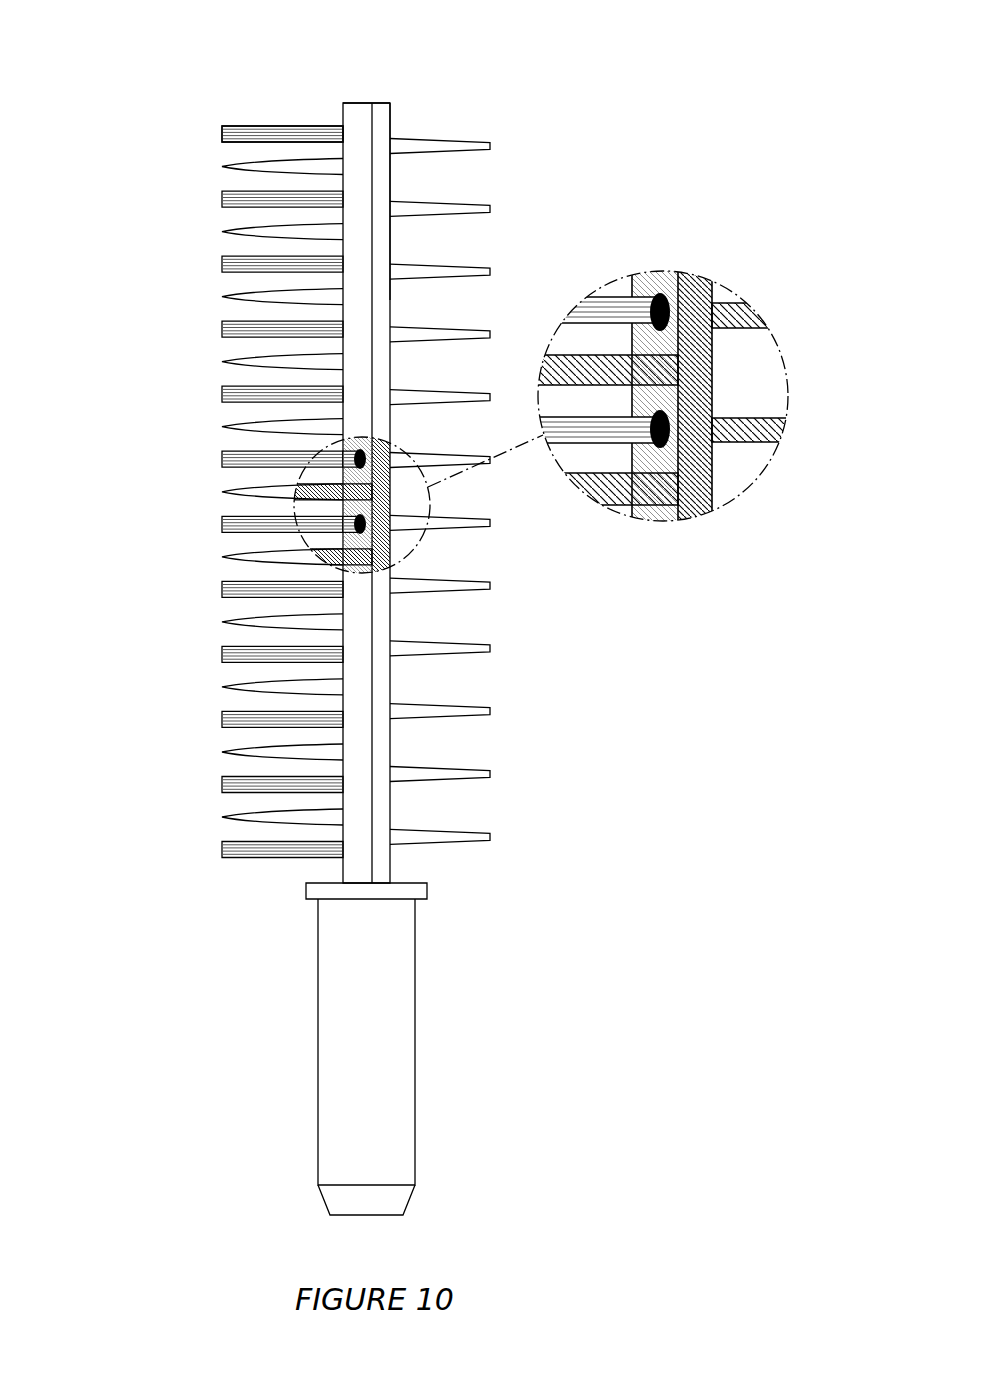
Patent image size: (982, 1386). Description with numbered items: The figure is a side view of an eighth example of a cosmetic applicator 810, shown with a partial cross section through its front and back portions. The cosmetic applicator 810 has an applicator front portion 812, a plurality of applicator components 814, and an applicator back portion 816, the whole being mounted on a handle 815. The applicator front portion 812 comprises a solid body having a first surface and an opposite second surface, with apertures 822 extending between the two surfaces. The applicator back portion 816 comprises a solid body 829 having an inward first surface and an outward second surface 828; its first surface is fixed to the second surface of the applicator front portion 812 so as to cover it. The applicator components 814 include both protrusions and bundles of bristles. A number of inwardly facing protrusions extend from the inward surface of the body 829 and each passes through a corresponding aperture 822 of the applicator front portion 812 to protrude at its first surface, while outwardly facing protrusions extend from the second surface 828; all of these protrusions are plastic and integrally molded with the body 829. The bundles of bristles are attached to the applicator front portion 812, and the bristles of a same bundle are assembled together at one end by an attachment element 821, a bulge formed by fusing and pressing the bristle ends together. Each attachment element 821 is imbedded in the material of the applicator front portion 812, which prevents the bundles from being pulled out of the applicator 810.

The cosmetic applicator 810 is at (438, 88).
The applicator front portion 812 is at (357, 103).
The applicator components 814 is at (342, 466).
The handle 815 is at (415, 1053).
The applicator back portion 816 is at (393, 120).
The attachment element 821 is at (712, 428).
The apertures 822 is at (630, 388).
The second surface 828 is at (386, 247).
The solid body 829 is at (703, 367).